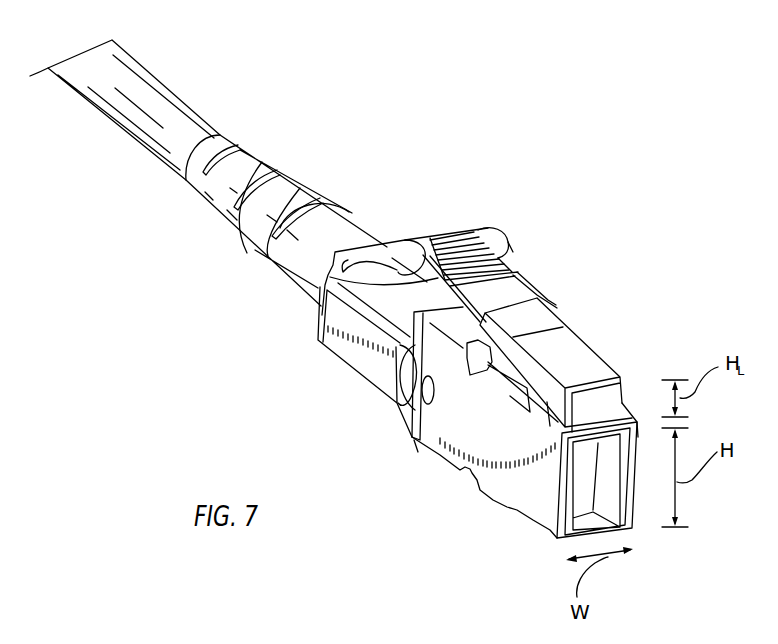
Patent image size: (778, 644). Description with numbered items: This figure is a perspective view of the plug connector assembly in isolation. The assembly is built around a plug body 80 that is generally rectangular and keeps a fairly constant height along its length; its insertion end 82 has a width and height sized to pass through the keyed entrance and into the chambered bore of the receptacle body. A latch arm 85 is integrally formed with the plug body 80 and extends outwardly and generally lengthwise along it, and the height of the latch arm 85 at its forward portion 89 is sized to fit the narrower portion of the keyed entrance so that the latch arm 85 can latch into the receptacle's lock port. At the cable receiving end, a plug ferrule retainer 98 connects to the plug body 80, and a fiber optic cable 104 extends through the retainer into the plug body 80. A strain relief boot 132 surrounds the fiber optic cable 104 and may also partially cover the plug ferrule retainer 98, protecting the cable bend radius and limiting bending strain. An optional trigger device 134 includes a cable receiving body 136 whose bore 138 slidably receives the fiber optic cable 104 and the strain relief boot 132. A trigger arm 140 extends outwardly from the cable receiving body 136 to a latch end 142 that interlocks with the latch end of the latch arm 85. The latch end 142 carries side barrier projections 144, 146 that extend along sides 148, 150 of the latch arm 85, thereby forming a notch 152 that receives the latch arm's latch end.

The fiber optic cable 104 is at (132, 90).
The strain relief boot 132 is at (345, 224).
The trigger device 134 is at (461, 204).
The trigger arm 140 is at (398, 238).
The latch end 142 is at (466, 230).
The side barrier projection 144 is at (458, 272).
The side barrier projection 146 is at (510, 252).
The side of latch arm 148 is at (458, 290).
The side of latch arm 150 is at (520, 273).
The notch 152 is at (490, 232).
The plug body 80 is at (625, 355).
The insertion end 82 is at (567, 498).
The latch arm 85 is at (568, 338).
The forward portion 89 is at (622, 400).
The plug ferrule retainer 98 is at (418, 450).
The cable receiving body 136 is at (318, 340).
The bore 138 is at (397, 377).